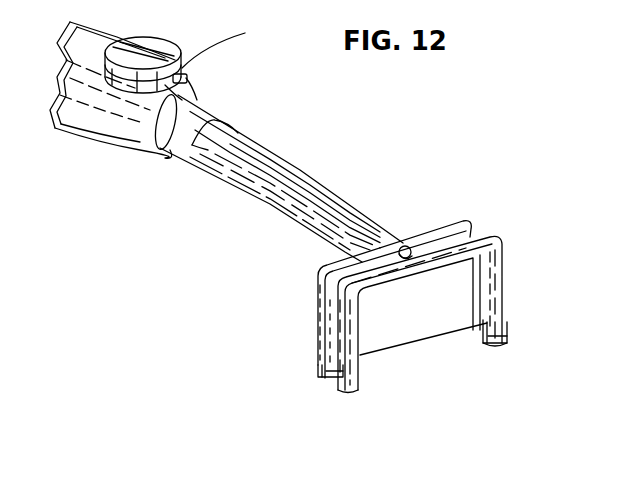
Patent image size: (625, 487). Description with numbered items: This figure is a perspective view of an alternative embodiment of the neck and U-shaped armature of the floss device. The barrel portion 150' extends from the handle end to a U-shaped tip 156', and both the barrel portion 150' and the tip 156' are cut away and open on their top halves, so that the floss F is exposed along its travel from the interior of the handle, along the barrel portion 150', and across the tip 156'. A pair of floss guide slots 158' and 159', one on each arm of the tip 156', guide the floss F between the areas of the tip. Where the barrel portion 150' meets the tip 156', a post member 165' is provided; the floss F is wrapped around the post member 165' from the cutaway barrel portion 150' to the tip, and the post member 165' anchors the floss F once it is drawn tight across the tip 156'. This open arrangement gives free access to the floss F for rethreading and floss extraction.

The barrel portion 150' is at (265, 177).
The tip 156' is at (443, 307).
The floss guide slot 158' is at (337, 400).
The floss guide slot 159' is at (519, 351).
The post member 165' is at (431, 218).
The floss F is at (415, 342).